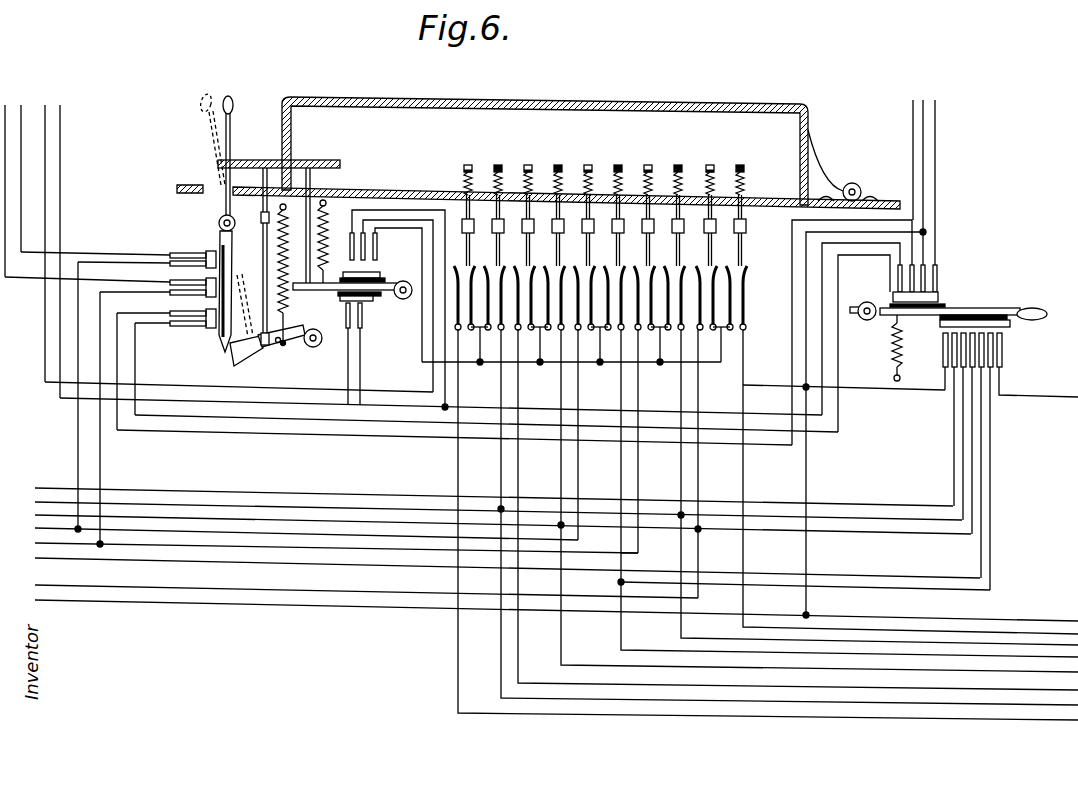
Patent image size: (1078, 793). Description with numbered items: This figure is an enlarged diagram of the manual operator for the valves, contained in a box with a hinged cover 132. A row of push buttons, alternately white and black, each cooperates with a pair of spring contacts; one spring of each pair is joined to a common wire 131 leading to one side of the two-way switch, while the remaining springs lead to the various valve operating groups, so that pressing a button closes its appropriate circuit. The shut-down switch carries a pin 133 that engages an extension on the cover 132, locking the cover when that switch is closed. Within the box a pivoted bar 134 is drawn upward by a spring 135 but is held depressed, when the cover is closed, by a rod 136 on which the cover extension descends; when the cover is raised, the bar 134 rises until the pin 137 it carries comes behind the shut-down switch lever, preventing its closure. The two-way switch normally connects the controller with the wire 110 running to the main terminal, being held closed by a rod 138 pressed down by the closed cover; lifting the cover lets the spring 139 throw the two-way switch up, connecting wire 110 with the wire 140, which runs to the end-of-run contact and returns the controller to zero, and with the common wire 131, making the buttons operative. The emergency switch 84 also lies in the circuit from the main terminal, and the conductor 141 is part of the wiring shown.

The emergency switch 84 is at (962, 306).
The wire 110 is at (440, 198).
The common wire 131 is at (543, 368).
The hinged cover 132 is at (640, 102).
The pin 133 is at (240, 152).
The pivoted bar 134 is at (286, 347).
The spring 135 is at (283, 296).
The rod 136 is at (218, 246).
The pin 137 is at (268, 352).
The rod 138 is at (330, 177).
The spring 139 is at (340, 213).
The wire 140 is at (396, 218).
The conductor 141 is at (58, 396).